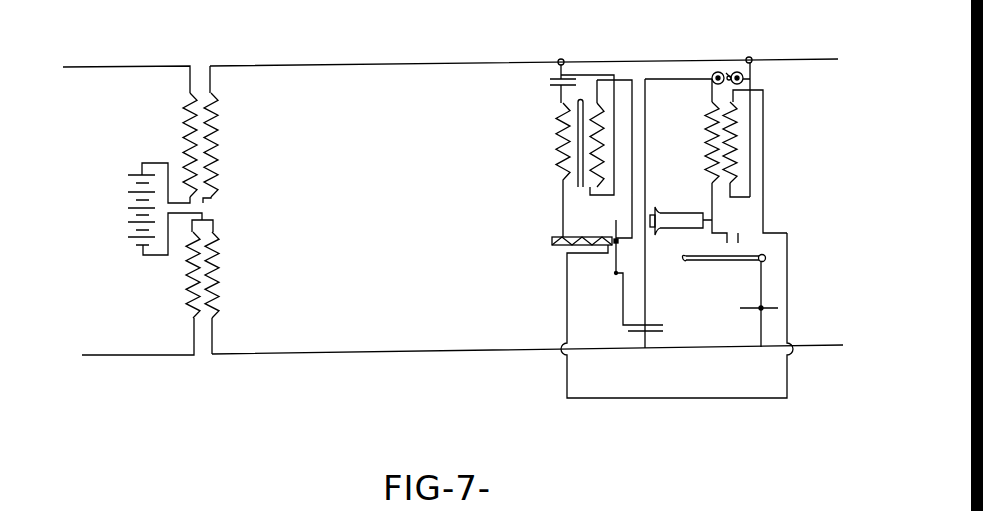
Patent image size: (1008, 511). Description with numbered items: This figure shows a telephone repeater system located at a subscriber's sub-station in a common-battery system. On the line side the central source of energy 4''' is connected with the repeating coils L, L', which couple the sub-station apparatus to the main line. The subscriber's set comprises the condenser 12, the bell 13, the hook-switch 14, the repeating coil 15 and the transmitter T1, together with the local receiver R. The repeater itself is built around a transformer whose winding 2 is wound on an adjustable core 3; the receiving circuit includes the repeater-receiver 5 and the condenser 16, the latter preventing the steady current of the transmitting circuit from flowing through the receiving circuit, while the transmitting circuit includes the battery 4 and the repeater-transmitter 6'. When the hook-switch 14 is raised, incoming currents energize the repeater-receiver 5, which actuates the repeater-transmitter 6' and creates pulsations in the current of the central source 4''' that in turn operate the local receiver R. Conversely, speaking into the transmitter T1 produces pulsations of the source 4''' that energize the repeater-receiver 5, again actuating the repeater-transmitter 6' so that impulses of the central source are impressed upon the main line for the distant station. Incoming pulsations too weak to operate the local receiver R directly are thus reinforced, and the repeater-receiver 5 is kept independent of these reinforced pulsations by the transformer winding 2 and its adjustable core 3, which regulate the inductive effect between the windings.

The repeating coil L is at (193, 134).
The repeating coil L' is at (197, 265).
The central source of energy 4''' is at (124, 223).
The condenser 16 is at (545, 83).
The battery 4 is at (551, 170).
The adjustable core 3 is at (576, 190).
The transformer winding 2 is at (598, 90).
The repeater-receiver 5 is at (552, 241).
The repeater-transmitter 6' is at (638, 272).
The condenser 12 is at (660, 213).
The bell 13 is at (727, 72).
The repeating coil 15 is at (721, 154).
The local receiver R is at (669, 213).
The hook-switch 14 is at (720, 261).
The transmitter T1 is at (766, 310).